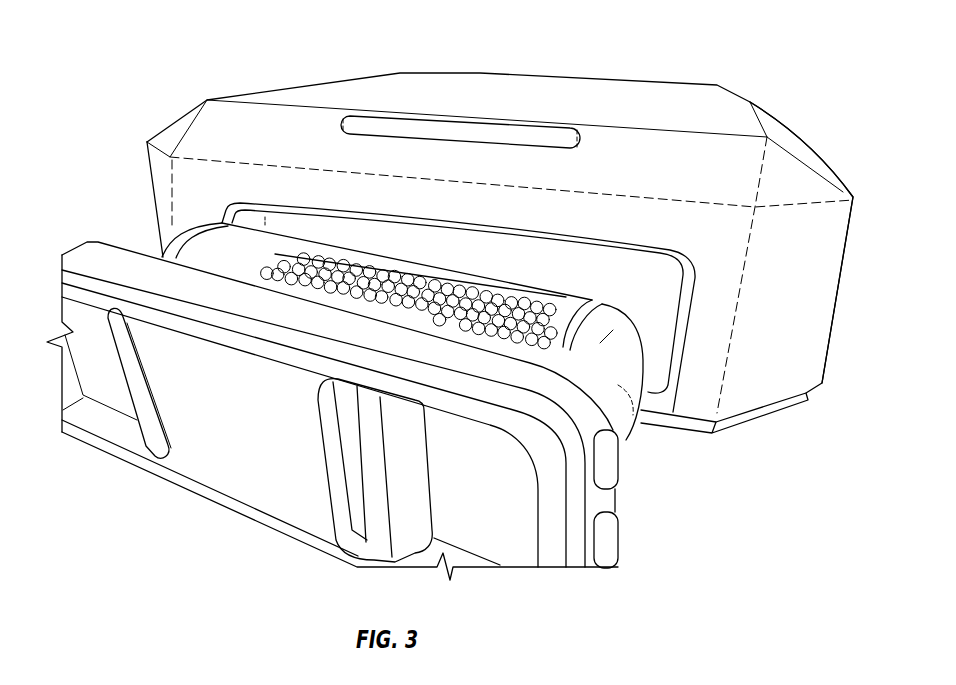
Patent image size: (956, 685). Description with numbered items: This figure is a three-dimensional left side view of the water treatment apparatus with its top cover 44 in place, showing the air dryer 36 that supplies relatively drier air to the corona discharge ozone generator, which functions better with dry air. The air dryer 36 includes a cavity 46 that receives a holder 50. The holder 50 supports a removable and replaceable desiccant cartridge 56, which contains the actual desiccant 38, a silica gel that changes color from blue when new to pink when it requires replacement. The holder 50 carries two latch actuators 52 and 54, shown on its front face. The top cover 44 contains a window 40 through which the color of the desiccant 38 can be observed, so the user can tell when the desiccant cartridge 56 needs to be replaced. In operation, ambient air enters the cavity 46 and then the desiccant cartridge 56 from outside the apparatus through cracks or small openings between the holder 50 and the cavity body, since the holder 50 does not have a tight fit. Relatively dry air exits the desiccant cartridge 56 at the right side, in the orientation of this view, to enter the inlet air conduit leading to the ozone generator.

The air dryer 36 is at (290, 183).
The desiccant 38 is at (468, 298).
The window 40 is at (520, 138).
The top cover 44 is at (652, 155).
The cavity 46 is at (612, 263).
The holder 50 is at (391, 346).
The latch actuator 52 is at (138, 380).
The latch actuator 54 is at (370, 405).
The desiccant cartridge 56 is at (627, 361).